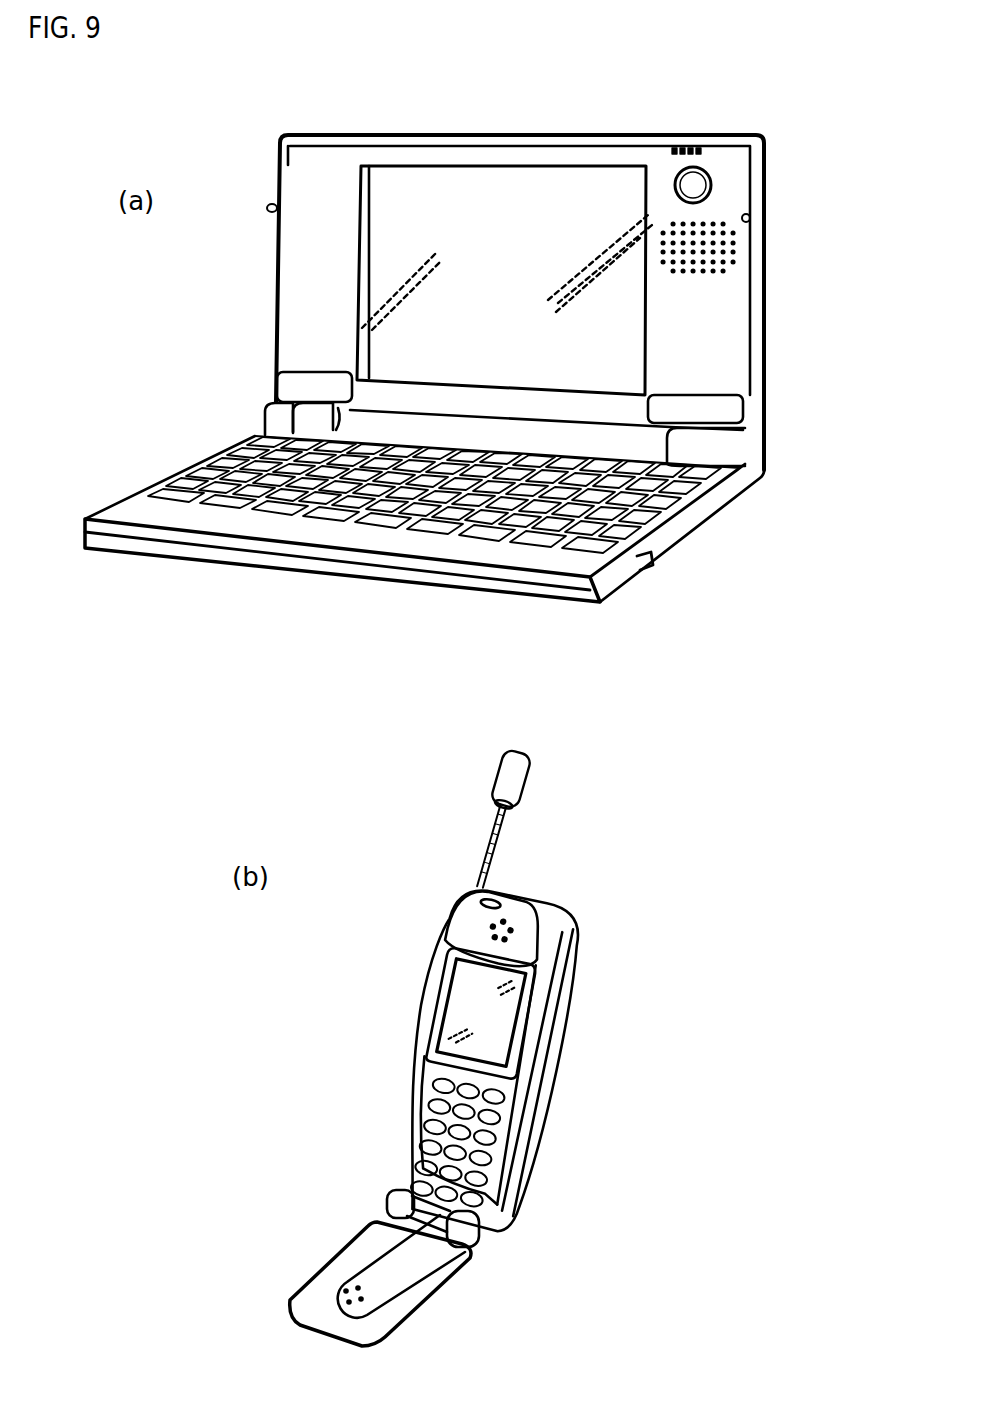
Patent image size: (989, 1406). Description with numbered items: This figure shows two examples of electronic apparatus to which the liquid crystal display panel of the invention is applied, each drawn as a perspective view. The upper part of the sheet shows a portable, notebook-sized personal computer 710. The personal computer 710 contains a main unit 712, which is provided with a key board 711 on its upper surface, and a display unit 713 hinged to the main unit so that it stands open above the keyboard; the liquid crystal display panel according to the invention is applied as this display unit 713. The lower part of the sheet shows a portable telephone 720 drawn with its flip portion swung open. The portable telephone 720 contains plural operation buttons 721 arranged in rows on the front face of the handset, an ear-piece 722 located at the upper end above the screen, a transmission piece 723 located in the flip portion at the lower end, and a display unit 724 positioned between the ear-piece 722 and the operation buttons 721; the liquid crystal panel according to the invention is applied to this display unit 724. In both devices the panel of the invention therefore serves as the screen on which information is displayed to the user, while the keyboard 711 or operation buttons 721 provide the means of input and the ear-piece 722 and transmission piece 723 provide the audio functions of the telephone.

The personal computer 710 is at (792, 143).
The key board 711 is at (657, 507).
The main unit 712 is at (258, 550).
The display unit 713 is at (463, 191).
The portable telephone 720 is at (642, 896).
The operation buttons 721 is at (493, 1128).
The ear-piece 722 is at (496, 928).
The transmission piece 723 is at (338, 1291).
The display unit 724 is at (482, 1013).